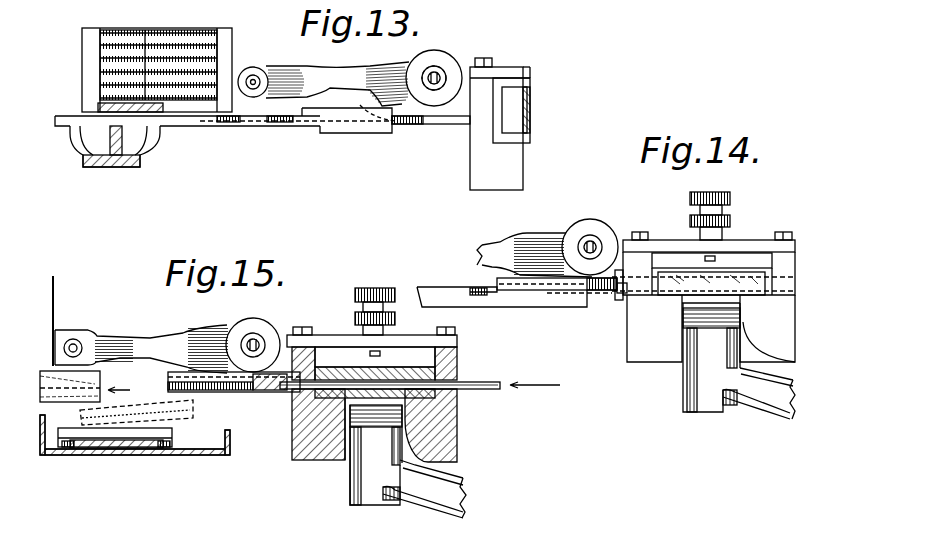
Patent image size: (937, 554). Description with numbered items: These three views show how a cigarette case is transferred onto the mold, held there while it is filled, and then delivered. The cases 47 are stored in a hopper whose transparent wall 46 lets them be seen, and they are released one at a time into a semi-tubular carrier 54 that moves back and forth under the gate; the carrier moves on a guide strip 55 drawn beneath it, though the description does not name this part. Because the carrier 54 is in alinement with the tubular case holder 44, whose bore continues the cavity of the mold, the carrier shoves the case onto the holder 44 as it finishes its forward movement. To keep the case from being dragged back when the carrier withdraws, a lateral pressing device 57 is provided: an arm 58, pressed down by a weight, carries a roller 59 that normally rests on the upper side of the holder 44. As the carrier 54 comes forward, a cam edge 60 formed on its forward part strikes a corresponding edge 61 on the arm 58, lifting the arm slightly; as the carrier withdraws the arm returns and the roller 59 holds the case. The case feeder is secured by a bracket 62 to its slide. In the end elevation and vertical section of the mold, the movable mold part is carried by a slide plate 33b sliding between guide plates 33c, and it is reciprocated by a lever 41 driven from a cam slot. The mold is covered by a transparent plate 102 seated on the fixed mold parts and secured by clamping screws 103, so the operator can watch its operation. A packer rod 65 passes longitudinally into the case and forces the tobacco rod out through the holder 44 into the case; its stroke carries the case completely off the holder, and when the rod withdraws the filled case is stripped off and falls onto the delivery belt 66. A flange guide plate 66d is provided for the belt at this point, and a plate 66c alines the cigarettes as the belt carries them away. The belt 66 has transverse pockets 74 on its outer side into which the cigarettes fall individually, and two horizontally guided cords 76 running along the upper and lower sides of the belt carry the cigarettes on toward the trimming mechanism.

In FIG. 13, the transparent wall 46 is at (232, 40).
In FIG. 13, the cigarette cases 47 is at (318, 108).
In FIG. 14, the cigarette cases 47 is at (600, 292).
In FIG. 13, the semi-tubular carrier 54 is at (323, 122).
In FIG. 15, the semi-tubular carrier 54 is at (107, 373).
In FIG. 13, the knurled guide strip 55 is at (255, 123).
In FIG. 14, the knurled guide strip 55 is at (478, 296).
In FIG. 13, the lateral pressing device 57 is at (438, 65).
In FIG. 13, the arm 58 is at (370, 80).
In FIG. 14, the arm 58 is at (507, 247).
In FIG. 15, the arm 58 is at (187, 338).
In FIG. 13, the roller 59 is at (445, 70).
In FIG. 14, the roller 59 is at (578, 226).
In FIG. 15, the roller 59 is at (275, 333).
In FIG. 13, the cam edge 60 is at (397, 112).
In FIG. 13, the edge 61 is at (397, 114).
In FIG. 13, the bracket 62 is at (132, 152).
In FIG. 13, the case holder 44 is at (455, 120).
In FIG. 15, the case holder 44 is at (273, 390).
In FIG. 13, the transparent plate 102 is at (532, 104).
In FIG. 14, the transparent plate 102 is at (670, 277).
In FIG. 15, the transparent plate 102 is at (403, 368).
In FIG. 14, the clamping screws 103 is at (730, 202).
In FIG. 14, the guide plates 33c is at (668, 296).
In FIG. 14, the slide plate 33b is at (712, 305).
In FIG. 14, the lever 41 is at (767, 410).
In FIG. 15, the lever 41 is at (466, 495).
In FIG. 15, the packer rod 65 is at (485, 390).
In FIG. 15, the delivery belt 66 is at (184, 455).
In FIG. 15, the aligning plate 66c is at (40, 442).
In FIG. 15, the flange guide plate 66d is at (222, 460).
In FIG. 15, the transverse pockets 74 is at (107, 443).
In FIG. 15, the cords 76 is at (72, 448).